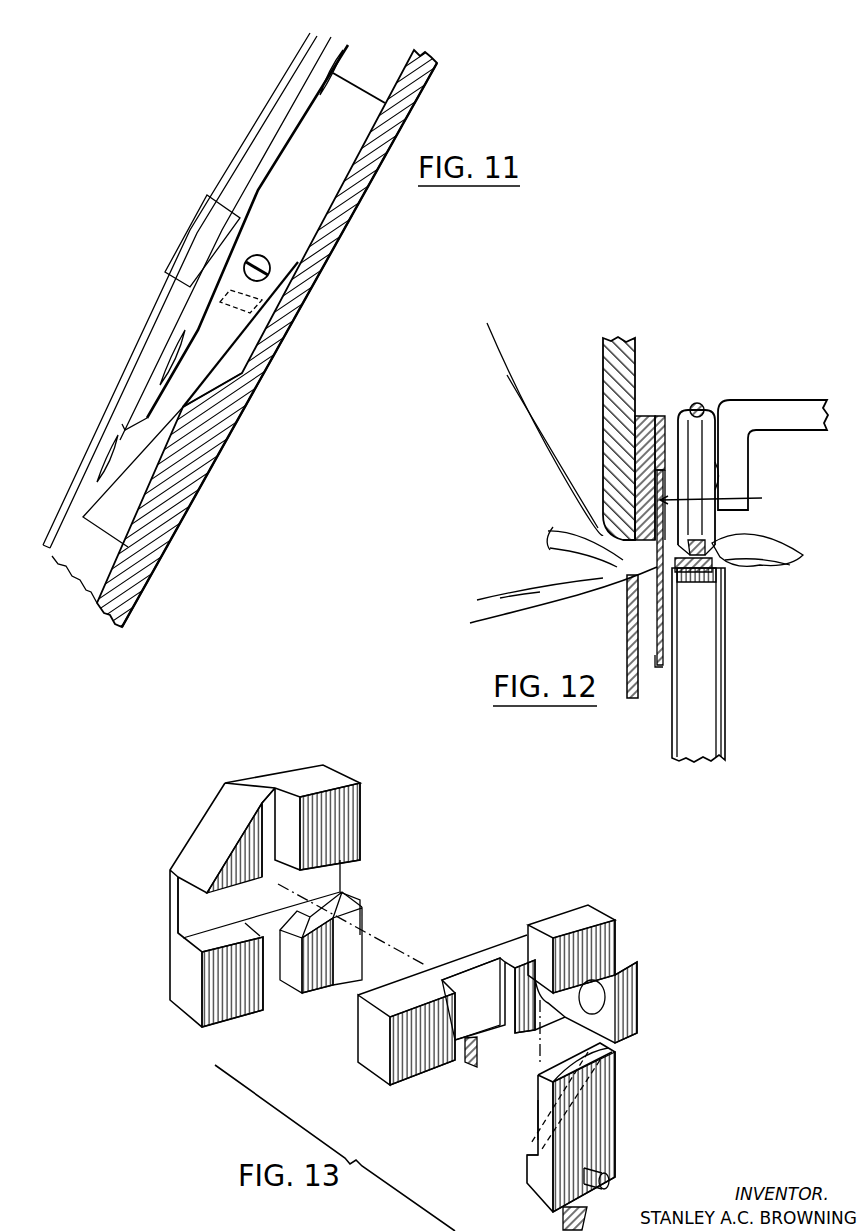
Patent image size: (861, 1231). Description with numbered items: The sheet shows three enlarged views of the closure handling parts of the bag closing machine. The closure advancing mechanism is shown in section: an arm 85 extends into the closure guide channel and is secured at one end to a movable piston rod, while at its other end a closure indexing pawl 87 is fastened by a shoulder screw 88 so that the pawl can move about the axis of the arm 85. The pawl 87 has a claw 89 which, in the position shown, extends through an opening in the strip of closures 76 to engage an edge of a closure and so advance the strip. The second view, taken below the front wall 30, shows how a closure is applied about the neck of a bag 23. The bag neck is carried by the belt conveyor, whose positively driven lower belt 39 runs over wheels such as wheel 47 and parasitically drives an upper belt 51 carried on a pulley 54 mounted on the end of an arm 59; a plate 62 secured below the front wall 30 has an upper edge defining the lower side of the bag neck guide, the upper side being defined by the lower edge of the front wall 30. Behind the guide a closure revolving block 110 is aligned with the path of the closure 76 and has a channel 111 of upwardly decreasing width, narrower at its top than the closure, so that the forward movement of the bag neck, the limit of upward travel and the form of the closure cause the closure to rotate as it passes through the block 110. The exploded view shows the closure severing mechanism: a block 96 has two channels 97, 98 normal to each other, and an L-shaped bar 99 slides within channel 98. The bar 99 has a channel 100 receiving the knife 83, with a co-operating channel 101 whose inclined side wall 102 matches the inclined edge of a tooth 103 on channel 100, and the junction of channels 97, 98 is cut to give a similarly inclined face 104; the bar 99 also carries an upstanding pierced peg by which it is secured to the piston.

In FIG. 12, the bag 23 is at (510, 368).
In FIG. 11, the front wall 30 is at (326, 239).
In FIG. 12, the front wall 30 is at (604, 370).
In FIG. 12, the lower belt 39 is at (708, 563).
In FIG. 12, the wheel 47 is at (700, 636).
In FIG. 12, the upper belt 51 is at (700, 404).
In FIG. 12, the pulley 54 is at (683, 414).
In FIG. 12, the arm 59 is at (776, 405).
In FIG. 12, the plate 62 is at (627, 637).
In FIG. 11, the closure 76 is at (340, 57).
In FIG. 12, the closure 76 is at (660, 668).
In FIG. 13, the knife 83 is at (575, 1136).
In FIG. 11, the arm 85 is at (317, 157).
In FIG. 11, the closure indexing pawl 87 is at (185, 410).
In FIG. 11, the shoulder screw 88 is at (276, 267).
In FIG. 11, the claw 89 is at (122, 428).
In FIG. 13, the block 96 is at (240, 879).
In FIG. 13, the channel 97 is at (275, 787).
In FIG. 13, the channel 98 is at (188, 918).
In FIG. 13, the L-shaped bar 99 is at (497, 997).
In FIG. 13, the channel 100 is at (477, 982).
In FIG. 13, the co-operating channel 101 is at (538, 1117).
In FIG. 13, the inclined side wall 102 is at (538, 1157).
In FIG. 13, the tooth 103 is at (497, 1043).
In FIG. 13, the inclined face 104 is at (300, 907).
In FIG. 12, the closure revolving block 110 is at (645, 414).
In FIG. 12, the channel 111 is at (728, 495).